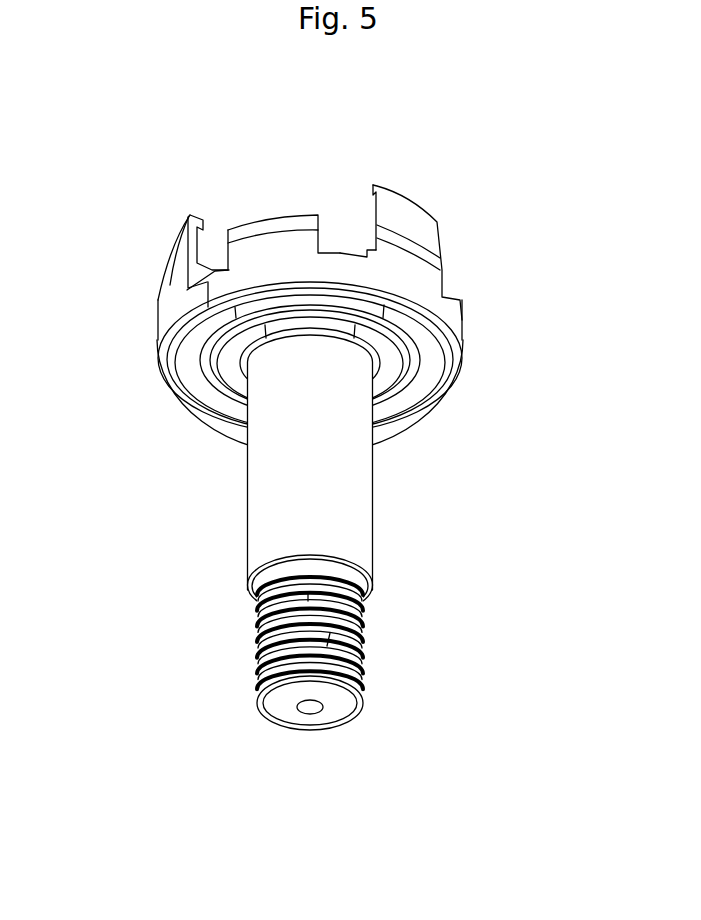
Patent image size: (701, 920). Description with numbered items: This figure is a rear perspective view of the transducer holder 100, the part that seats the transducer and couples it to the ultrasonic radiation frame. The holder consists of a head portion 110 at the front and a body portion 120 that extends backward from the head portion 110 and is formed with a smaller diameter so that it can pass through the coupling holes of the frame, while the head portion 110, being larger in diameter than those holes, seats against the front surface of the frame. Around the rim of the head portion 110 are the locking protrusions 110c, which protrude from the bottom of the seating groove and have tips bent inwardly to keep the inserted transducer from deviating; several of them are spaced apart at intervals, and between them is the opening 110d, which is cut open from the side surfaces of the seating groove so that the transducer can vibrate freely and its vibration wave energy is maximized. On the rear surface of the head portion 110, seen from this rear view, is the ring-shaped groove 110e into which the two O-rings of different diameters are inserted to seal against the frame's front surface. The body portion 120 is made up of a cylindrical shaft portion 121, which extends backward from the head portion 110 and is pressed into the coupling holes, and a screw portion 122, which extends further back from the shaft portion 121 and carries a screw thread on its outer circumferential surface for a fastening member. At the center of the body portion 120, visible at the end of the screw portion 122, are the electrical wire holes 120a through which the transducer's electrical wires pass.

The transducer holder 100 is at (116, 140).
The head portion 110 is at (471, 261).
The locking protrusion 110c is at (268, 216).
The opening 110d is at (345, 222).
The ring-shaped groove 110e is at (237, 370).
The body portion 120 is at (470, 508).
The shaft portion 121 is at (350, 488).
The screw portion 122 is at (367, 622).
The electrical wire holes 120a is at (312, 709).